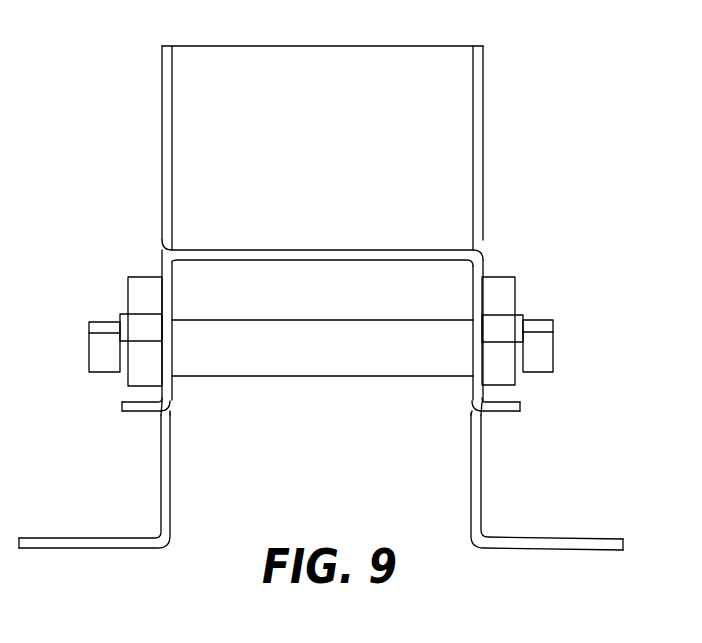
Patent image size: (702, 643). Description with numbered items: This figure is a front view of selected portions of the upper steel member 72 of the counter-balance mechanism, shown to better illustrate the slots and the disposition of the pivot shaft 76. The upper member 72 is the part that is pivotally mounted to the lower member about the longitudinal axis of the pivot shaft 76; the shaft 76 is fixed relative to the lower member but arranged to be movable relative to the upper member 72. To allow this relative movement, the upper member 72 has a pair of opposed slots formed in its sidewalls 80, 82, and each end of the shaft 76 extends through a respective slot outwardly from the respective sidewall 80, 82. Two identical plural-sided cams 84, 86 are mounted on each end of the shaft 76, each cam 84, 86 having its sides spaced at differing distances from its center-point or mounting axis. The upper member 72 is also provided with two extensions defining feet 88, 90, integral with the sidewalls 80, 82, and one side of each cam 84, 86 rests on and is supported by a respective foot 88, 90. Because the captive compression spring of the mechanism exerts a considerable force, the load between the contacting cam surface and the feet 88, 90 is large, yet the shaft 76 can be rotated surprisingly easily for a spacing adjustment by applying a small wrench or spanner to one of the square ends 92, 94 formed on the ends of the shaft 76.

The upper steel member 72 is at (321, 298).
The pivot shaft 76 is at (319, 362).
The sidewall 80 is at (485, 173).
The sidewall 82 is at (162, 211).
The plural-sided cam 84 is at (505, 294).
The plural-sided cam 86 is at (135, 294).
The foot 88 is at (522, 407).
The foot 90 is at (122, 407).
The square end 92 is at (557, 344).
The square end 94 is at (97, 356).